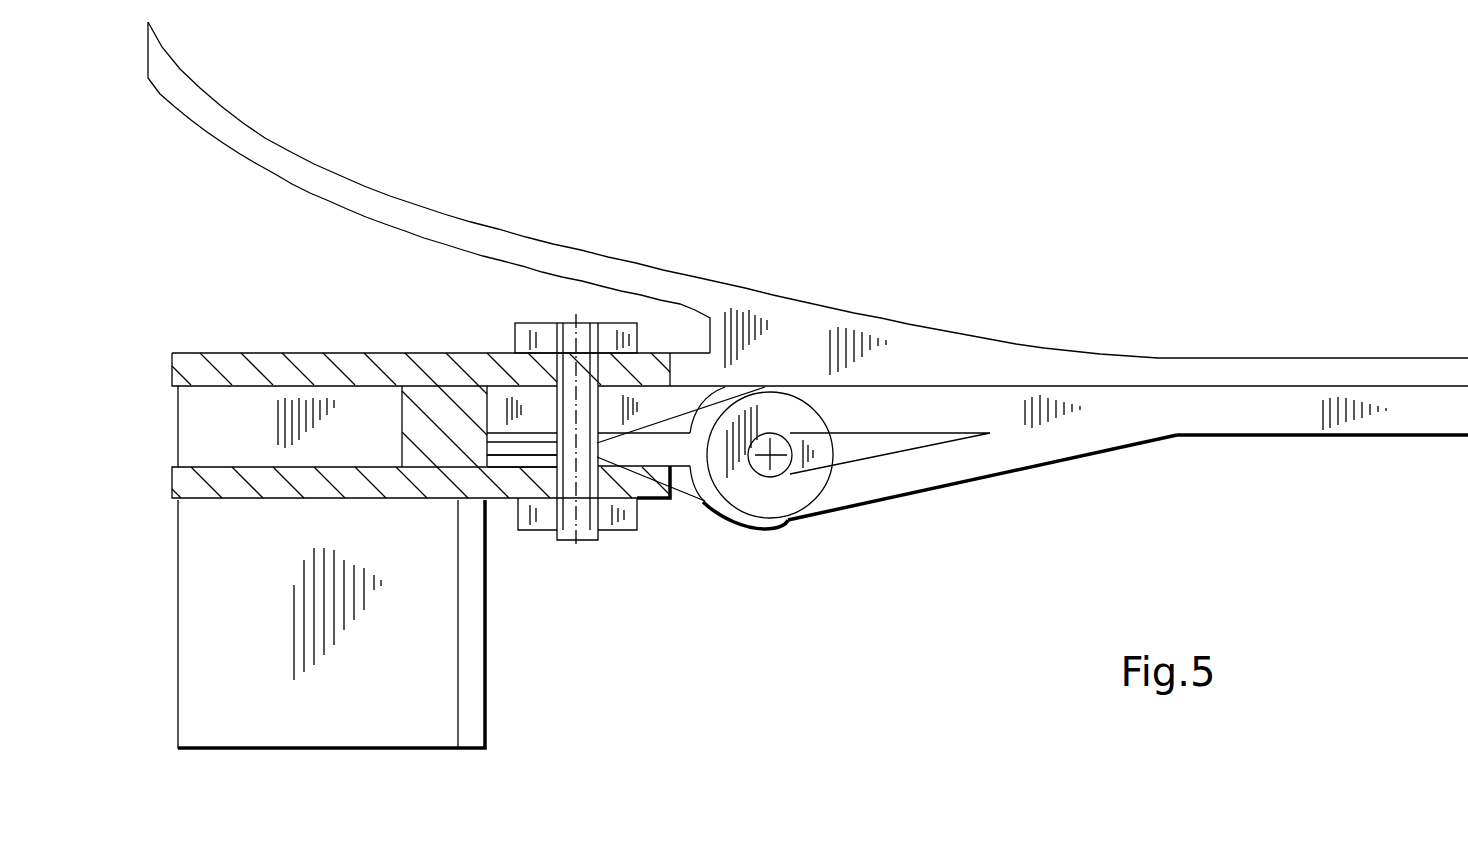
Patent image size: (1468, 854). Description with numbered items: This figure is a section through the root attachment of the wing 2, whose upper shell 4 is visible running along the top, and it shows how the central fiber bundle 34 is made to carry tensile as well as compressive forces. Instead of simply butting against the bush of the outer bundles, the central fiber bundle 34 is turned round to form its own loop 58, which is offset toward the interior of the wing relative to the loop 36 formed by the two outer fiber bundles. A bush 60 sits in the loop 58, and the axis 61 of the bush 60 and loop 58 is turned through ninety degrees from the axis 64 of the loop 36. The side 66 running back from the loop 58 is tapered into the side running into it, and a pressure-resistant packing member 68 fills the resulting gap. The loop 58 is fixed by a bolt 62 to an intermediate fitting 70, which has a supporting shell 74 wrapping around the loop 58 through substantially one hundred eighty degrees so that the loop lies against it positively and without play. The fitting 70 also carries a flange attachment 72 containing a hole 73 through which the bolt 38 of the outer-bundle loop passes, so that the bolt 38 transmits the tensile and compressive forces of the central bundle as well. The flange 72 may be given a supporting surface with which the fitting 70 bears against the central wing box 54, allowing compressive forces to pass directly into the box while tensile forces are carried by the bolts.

The wing 2 is at (1117, 334).
The upper shell 4 is at (1192, 375).
The central fiber bundle 34 is at (1290, 420).
The loop 36 is at (503, 403).
The bolt 38 is at (598, 540).
The central wing box 54 is at (468, 670).
The loop 58 is at (750, 500).
The bush 60 is at (780, 483).
The axis 61 is at (770, 470).
The bolt 62 is at (782, 442).
The axis 64 is at (575, 507).
The side running back 66 is at (933, 470).
The pressure-resistant packing member 68 is at (857, 450).
The intermediate fitting 70 is at (685, 452).
The flange attachment 72 is at (545, 455).
The hole 73 is at (555, 445).
The supporting shell 74 is at (708, 503).